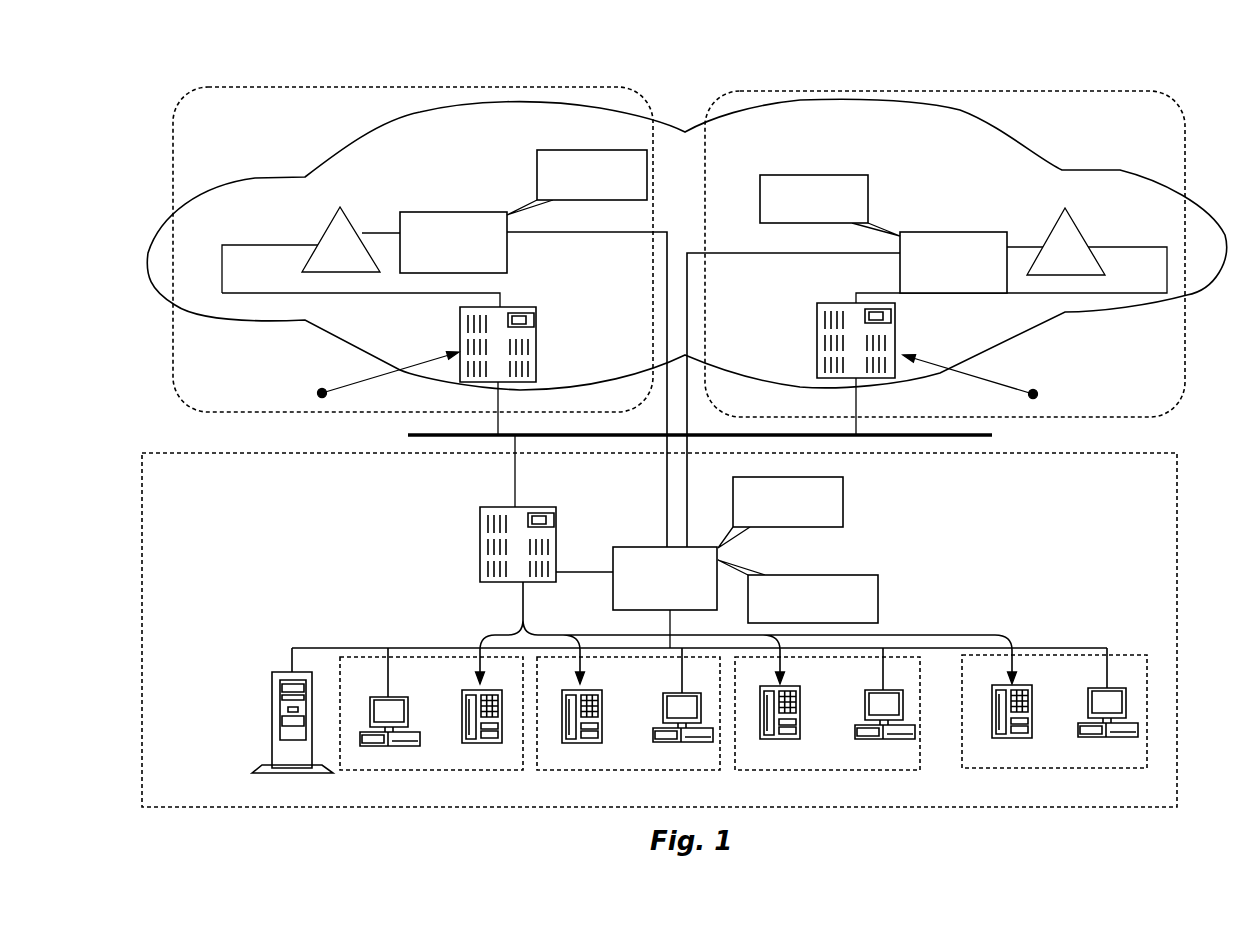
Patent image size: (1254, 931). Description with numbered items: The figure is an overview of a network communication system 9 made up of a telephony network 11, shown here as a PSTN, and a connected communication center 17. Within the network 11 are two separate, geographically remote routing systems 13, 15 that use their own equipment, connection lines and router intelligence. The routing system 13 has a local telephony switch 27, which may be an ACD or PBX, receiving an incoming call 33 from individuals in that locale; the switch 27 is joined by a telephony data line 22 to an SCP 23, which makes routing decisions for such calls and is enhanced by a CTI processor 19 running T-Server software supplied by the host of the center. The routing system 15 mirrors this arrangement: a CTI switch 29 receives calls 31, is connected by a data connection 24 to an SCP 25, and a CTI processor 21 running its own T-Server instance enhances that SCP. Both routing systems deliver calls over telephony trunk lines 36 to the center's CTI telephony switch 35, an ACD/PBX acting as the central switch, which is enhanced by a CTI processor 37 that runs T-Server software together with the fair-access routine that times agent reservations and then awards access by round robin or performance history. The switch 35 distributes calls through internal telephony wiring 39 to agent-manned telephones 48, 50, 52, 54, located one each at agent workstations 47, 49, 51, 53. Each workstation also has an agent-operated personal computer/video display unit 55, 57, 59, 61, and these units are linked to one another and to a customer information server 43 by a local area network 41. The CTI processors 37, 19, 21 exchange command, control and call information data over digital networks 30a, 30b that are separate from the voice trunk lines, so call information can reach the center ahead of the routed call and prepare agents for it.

The network communication system 9 is at (690, 92).
The telephony network 11 is at (150, 228).
The routing system 13 is at (466, 76).
The routing system 15 is at (1093, 82).
The communication center 17 is at (1202, 569).
The CTI processor 19 is at (458, 212).
The CTI processor 21 is at (940, 232).
The telephony data line 22 is at (440, 298).
The SCP 23 is at (322, 236).
The data connection 24 is at (1022, 296).
The SCP 25 is at (1090, 233).
The local telephony switch 27 is at (538, 345).
The CTI switch 29 is at (818, 362).
The digital network 30a is at (662, 306).
The digital network 30b is at (757, 253).
The calls 31 is at (1005, 385).
The incoming call 33 is at (345, 382).
The CTI telephony switch 35 is at (478, 545).
The telephony trunk lines 36 is at (830, 438).
The CTI processor 37 is at (657, 547).
The internal telephony wiring 39 is at (519, 592).
The local area network 41 is at (1025, 637).
The customer information server 43 is at (275, 735).
The agent workstation 47 is at (440, 775).
The agent-manned telephone 48 is at (462, 718).
The agent workstation 49 is at (640, 775).
The agent-manned telephone 50 is at (602, 718).
The agent workstation 51 is at (862, 771).
The agent-manned telephone 52 is at (800, 718).
The agent workstation 53 is at (1090, 769).
The agent-manned telephone 54 is at (1033, 714).
The personal computer/video display unit 55 is at (372, 745).
The personal computer/video display unit 57 is at (688, 744).
The personal computer/video display unit 59 is at (885, 742).
The personal computer/video display unit 61 is at (1108, 740).